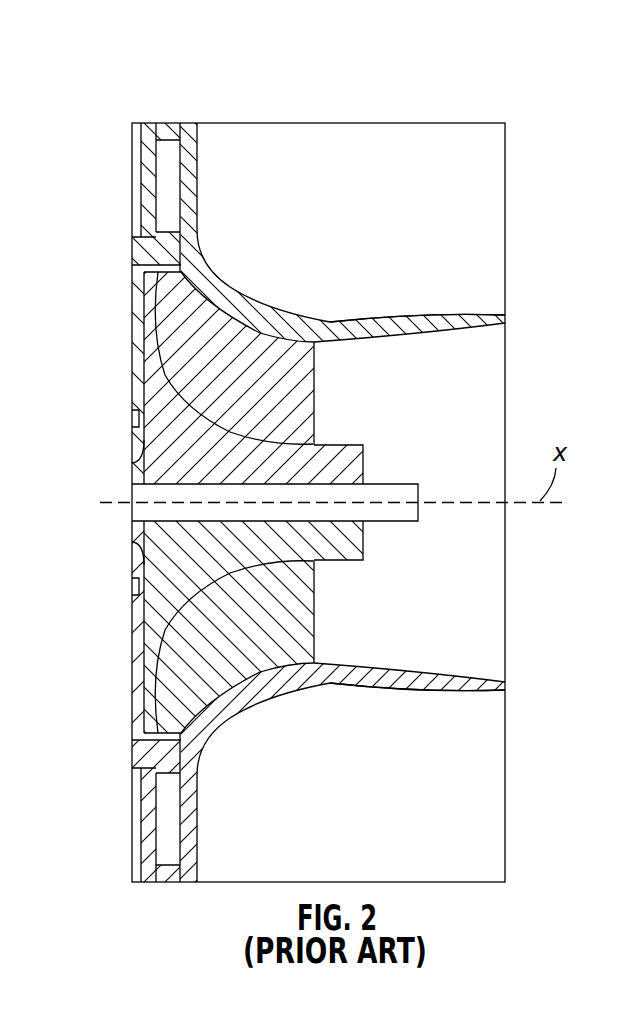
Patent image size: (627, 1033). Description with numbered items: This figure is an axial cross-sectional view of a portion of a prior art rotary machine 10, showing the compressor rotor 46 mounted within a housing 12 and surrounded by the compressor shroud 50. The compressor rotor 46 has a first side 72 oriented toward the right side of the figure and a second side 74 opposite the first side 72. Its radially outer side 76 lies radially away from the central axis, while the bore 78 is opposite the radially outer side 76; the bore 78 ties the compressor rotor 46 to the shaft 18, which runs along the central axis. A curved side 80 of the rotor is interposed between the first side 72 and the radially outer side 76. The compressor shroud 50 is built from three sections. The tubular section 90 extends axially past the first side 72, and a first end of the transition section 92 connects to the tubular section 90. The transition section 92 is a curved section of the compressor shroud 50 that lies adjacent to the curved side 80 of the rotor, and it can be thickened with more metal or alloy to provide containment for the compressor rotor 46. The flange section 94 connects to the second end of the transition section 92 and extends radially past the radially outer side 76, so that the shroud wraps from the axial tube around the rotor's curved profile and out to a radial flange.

The compressor assembly 10 is at (548, 91).
The housing 12 is at (388, 121).
The shaft 18 is at (405, 484).
The compressor rotor 46 is at (338, 447).
The compressor shroud 50 is at (396, 322).
The first side 72 is at (316, 382).
The second side 74 is at (140, 375).
The radially outer side 76 is at (160, 265).
The bore 78 is at (147, 487).
The curved side 80 is at (178, 323).
The tubular section 90 is at (366, 321).
The transition section 92 is at (244, 310).
The flange section 94 is at (190, 176).